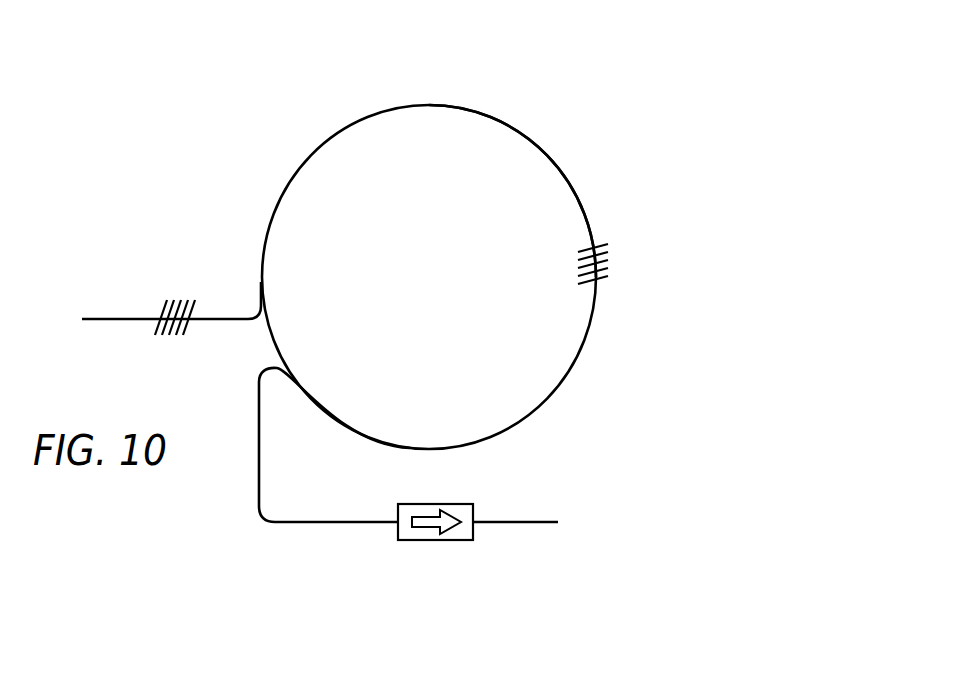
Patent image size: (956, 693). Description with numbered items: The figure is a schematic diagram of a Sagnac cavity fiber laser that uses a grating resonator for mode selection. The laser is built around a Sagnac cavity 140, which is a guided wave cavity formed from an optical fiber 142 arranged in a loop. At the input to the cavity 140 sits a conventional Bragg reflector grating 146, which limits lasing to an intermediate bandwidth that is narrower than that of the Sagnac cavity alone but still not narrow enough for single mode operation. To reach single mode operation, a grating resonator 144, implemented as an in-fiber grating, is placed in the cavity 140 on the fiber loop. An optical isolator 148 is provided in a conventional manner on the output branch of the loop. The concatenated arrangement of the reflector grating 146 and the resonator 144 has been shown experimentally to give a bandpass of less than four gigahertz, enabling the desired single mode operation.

The Sagnac cavity 140 is at (519, 126).
The optical fiber 142 is at (568, 182).
The grating resonator 144 is at (598, 277).
The Bragg reflector grating 146 is at (185, 326).
The optical isolator 148 is at (473, 510).